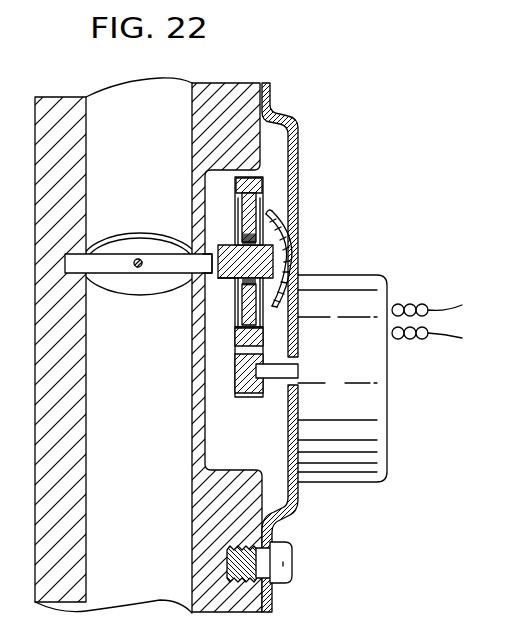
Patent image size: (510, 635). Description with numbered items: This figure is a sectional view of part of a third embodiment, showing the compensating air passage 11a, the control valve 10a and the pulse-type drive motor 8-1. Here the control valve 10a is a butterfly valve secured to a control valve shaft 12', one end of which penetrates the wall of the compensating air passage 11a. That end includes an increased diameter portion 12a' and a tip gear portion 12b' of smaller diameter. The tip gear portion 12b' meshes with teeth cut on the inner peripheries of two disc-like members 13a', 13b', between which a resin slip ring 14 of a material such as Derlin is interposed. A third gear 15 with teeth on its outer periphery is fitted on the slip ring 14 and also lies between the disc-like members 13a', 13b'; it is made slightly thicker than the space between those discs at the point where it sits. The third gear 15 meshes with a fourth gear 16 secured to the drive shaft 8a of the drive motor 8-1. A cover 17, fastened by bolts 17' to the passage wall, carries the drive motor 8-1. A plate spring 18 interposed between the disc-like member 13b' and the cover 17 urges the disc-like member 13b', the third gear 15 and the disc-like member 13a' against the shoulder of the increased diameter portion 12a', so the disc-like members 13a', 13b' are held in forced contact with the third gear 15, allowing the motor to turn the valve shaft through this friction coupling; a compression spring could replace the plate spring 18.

The drive motor 8-1 is at (377, 282).
The drive shaft 8a is at (296, 372).
The control valve 10a is at (133, 240).
The compensating air passage 11a is at (100, 129).
The control valve shaft 12' is at (138, 292).
The increased diameter portion 12a' is at (179, 294).
The tip gear portion 12b' is at (194, 321).
The disc-like member 13a' is at (205, 336).
The disc-like member 13b' is at (285, 204).
The slip ring 14 is at (275, 252).
The third gear 15 is at (264, 336).
The fourth gear 16 is at (236, 386).
The cover 17 is at (289, 347).
The bolt 17' is at (279, 548).
The plate spring 18 is at (283, 233).